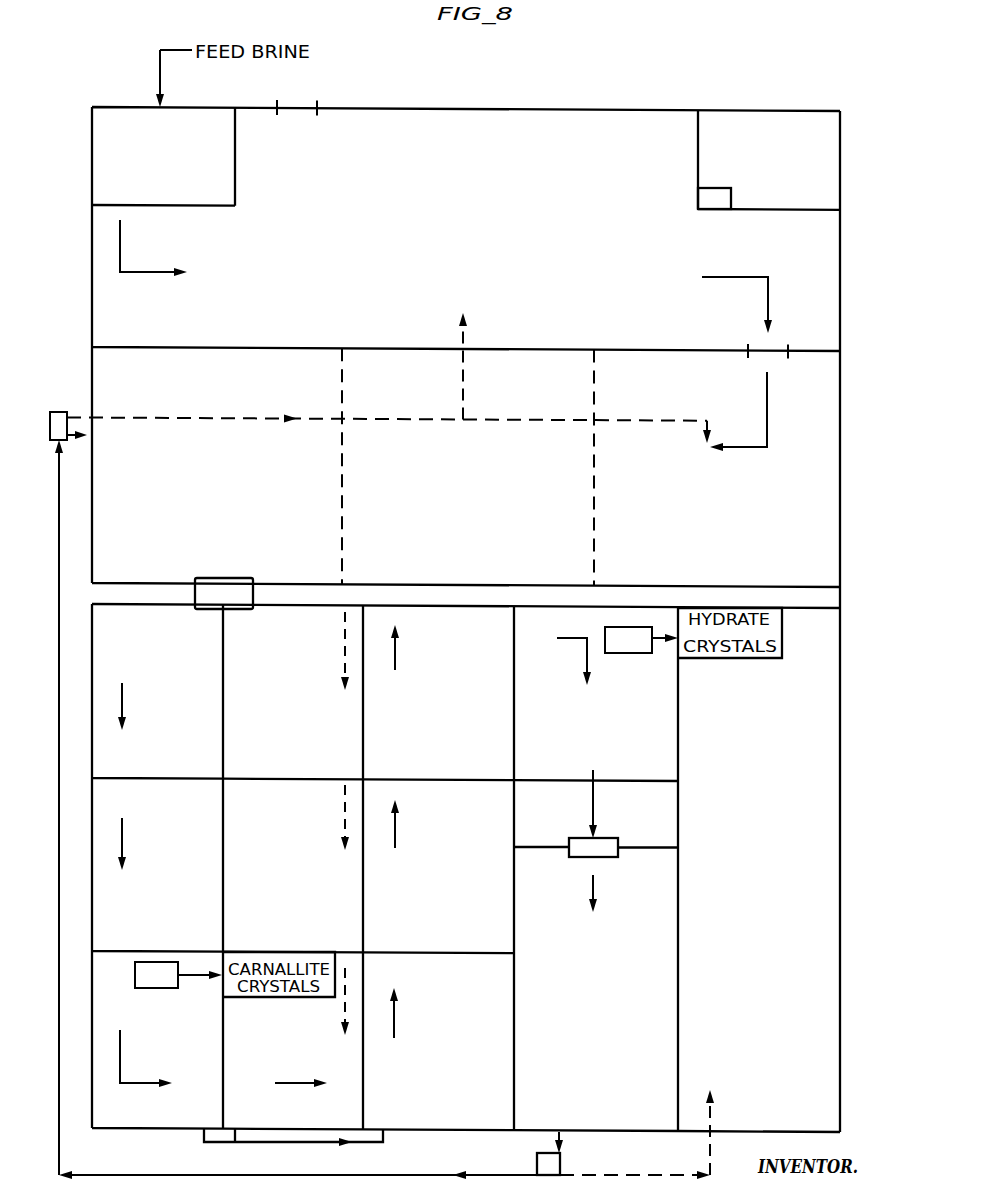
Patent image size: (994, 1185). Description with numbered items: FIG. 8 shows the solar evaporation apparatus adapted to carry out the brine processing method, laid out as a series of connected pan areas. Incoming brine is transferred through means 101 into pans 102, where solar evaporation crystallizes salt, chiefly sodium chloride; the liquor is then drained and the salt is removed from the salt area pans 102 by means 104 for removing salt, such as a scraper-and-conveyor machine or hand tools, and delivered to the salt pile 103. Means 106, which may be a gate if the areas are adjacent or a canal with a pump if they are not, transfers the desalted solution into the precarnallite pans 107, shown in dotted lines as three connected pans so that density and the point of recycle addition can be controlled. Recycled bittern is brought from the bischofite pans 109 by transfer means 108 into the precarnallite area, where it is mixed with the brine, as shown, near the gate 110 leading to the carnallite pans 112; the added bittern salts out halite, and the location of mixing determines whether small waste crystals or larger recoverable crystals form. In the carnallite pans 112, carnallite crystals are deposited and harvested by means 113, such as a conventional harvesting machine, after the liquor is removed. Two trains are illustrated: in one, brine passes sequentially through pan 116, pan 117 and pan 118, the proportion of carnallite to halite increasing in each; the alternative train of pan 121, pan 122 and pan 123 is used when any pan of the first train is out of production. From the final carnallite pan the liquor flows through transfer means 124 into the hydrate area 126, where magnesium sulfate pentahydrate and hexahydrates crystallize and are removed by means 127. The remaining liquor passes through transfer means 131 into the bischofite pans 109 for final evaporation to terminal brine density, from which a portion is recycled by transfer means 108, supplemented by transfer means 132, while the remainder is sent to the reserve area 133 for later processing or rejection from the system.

The means 101 is at (297, 107).
The pans 102 is at (461, 264).
The salt pile 103 is at (814, 206).
The means for removing salt 104 is at (717, 203).
The means 106 is at (765, 349).
The precarnallite pans 107 is at (459, 492).
The transfer means 108 is at (62, 417).
The bischofite pans 109 is at (596, 869).
The gate 110 is at (226, 587).
The carnallite pans 112 is at (227, 866).
The means 113 is at (178, 975).
The pan 116 is at (181, 677).
The pan 117 is at (161, 919).
The pan 118 is at (182, 1051).
The pan 121 is at (287, 677).
The pan 122 is at (321, 921).
The pan 123 is at (292, 1051).
The transfer means 124 is at (207, 1130).
The hydrate area 126 is at (437, 926).
The means 127 is at (641, 640).
The transfer means 131 is at (605, 845).
The transfer means 132 is at (563, 1165).
The reserve area 133 is at (754, 844).